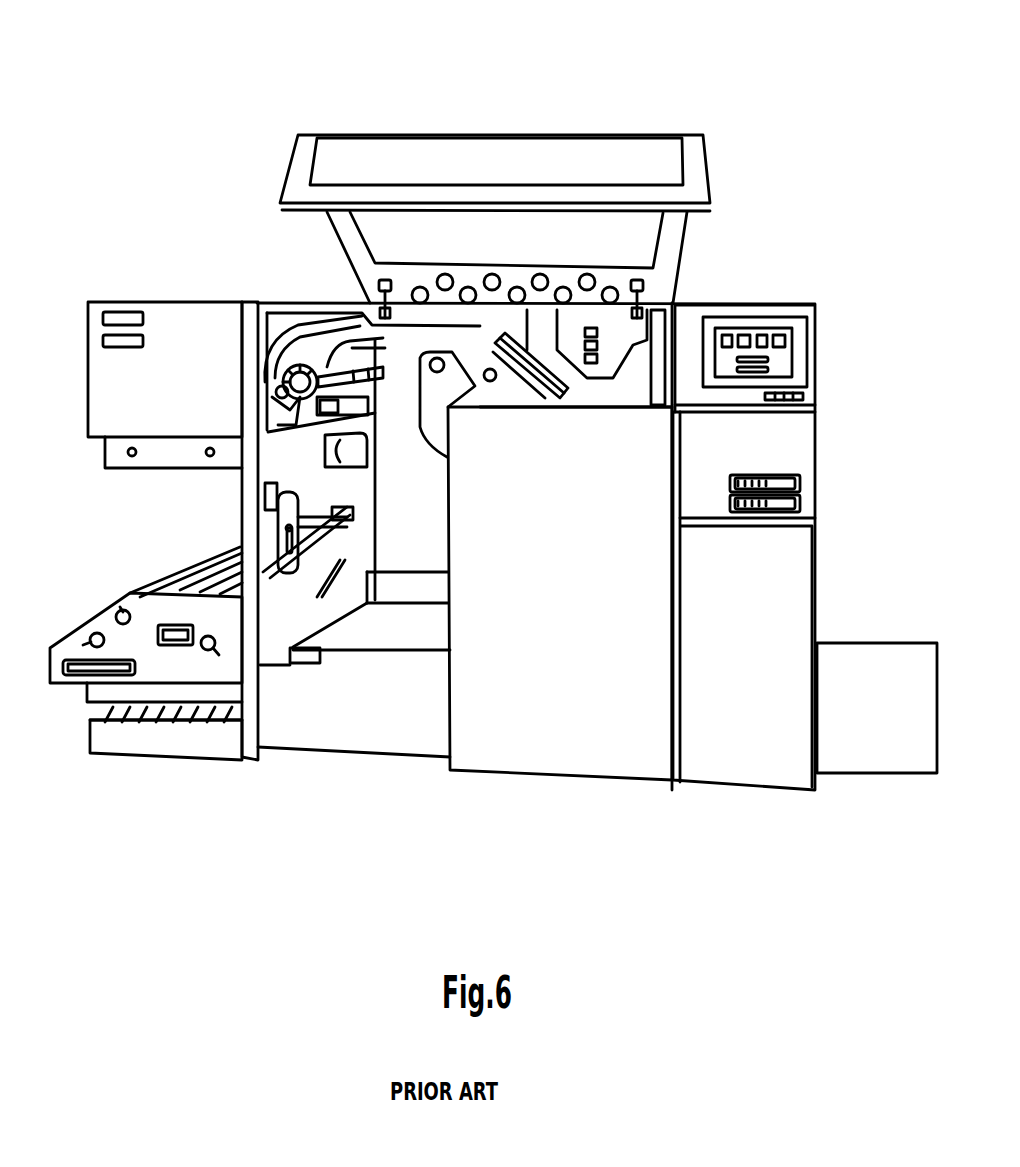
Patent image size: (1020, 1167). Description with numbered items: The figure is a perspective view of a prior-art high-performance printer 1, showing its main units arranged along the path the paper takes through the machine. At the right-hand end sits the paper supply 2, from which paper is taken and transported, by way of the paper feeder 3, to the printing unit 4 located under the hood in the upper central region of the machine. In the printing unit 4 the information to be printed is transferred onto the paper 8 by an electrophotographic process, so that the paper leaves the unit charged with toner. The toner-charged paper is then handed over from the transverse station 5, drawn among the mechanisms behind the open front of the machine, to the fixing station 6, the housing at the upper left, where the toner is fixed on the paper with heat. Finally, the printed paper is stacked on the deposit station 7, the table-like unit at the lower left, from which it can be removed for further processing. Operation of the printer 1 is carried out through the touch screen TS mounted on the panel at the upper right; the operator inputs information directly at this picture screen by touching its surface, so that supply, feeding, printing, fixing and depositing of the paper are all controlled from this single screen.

The high-performance printer 1 is at (654, 38).
The paper supply 2 is at (870, 654).
The paper feeder 3 is at (297, 527).
The printing unit 4 is at (512, 395).
The transverse station 5 is at (320, 369).
The fixing station 6 is at (185, 315).
The deposit station 7 is at (203, 585).
The paper 8 is at (437, 628).
The touch screen TS is at (783, 360).